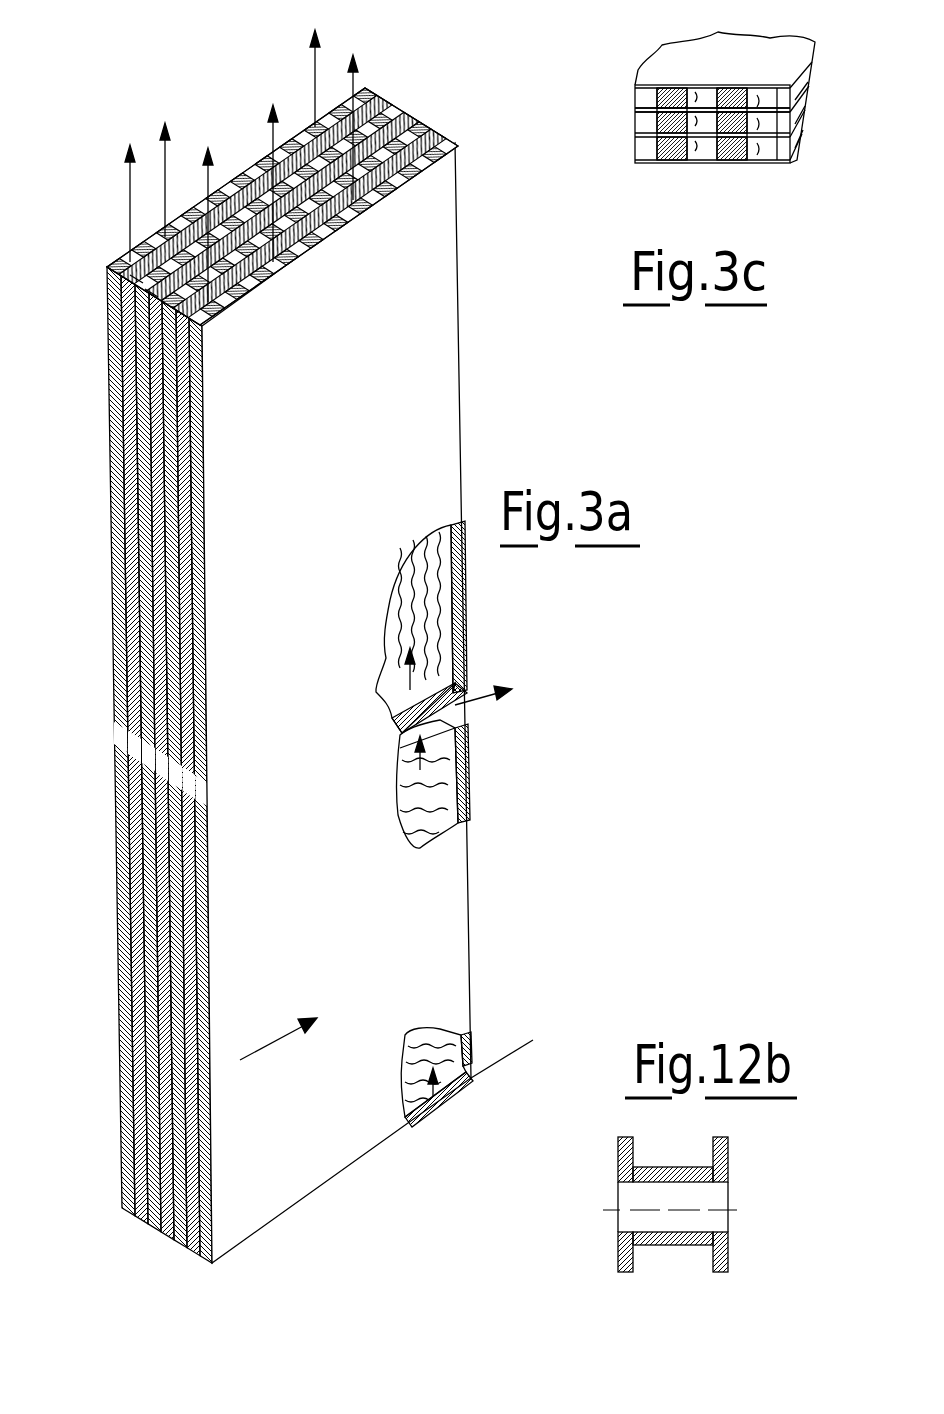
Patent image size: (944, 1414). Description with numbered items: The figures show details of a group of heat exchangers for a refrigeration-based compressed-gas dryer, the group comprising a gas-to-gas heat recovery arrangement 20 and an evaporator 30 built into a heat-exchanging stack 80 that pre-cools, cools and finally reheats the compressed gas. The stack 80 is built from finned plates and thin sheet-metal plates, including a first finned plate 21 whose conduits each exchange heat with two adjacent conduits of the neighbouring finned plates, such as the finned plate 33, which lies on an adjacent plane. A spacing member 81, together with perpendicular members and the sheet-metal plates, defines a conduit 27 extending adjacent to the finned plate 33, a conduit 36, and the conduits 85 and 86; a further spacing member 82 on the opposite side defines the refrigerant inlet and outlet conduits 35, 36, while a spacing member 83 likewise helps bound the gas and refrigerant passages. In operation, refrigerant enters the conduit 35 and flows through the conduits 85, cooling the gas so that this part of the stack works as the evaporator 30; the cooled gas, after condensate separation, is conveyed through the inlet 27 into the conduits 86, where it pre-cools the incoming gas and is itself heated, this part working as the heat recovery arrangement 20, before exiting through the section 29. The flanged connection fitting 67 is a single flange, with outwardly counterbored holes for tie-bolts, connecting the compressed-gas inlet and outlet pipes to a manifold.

In FIG. 3A, the heat recovery arrangement 20 is at (290, 631).
In FIG. 3C, the first finned plate 21 is at (638, 130).
In FIG. 3A, the conduit 27 is at (203, 790).
In FIG. 3A, the section 29 is at (165, 172).
In FIG. 3A, the evaporator 30 is at (131, 765).
In FIG. 3C, the third finned plate 33 is at (668, 68).
In FIG. 3A, the inlet conduit 35 is at (521, 1045).
In FIG. 3A, the outlet conduit 36 is at (502, 684).
In FIG. 12B, the flanged connection fitting 67 is at (665, 1262).
In FIG. 3A, the heat-exchanging stack 80 is at (150, 292).
In FIG. 3A, the spacing member 81 is at (455, 697).
In FIG. 3A, the spacing member 82 is at (438, 1114).
In FIG. 3A, the spacing member 83 is at (418, 145).
In FIG. 3A, the conduits 85 is at (398, 780).
In FIG. 3A, the conduits 86 is at (386, 665).